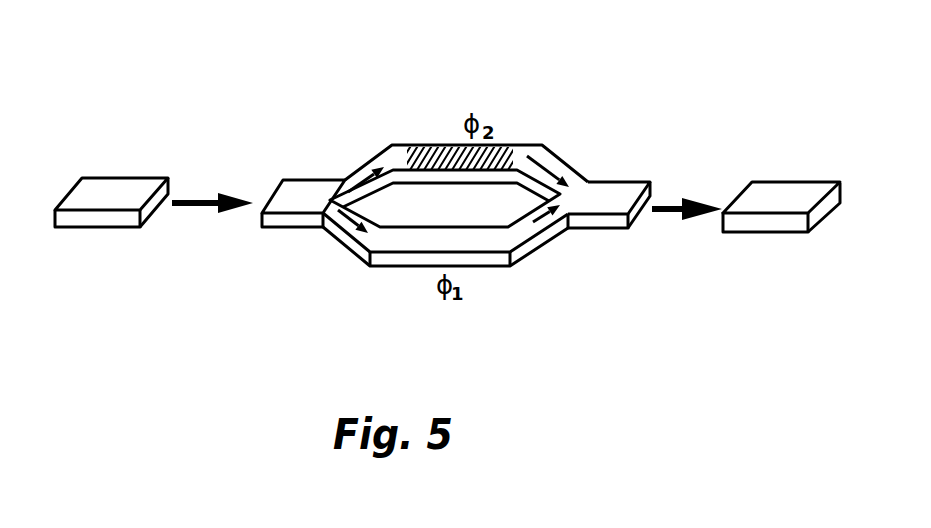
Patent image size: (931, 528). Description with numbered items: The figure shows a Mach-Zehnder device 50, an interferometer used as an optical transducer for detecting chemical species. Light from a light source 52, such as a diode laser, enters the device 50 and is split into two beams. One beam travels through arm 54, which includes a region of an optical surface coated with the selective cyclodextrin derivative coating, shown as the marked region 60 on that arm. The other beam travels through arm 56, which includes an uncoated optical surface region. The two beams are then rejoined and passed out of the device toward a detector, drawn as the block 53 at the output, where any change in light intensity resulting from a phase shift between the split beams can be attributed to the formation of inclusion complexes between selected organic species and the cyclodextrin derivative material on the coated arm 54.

The Mach-Zehnder device 50 is at (646, 102).
The light source 52 is at (112, 170).
The detector 53 is at (777, 177).
The arm 54 is at (358, 162).
The arm 56 is at (340, 247).
The sensing region 60 is at (448, 128).